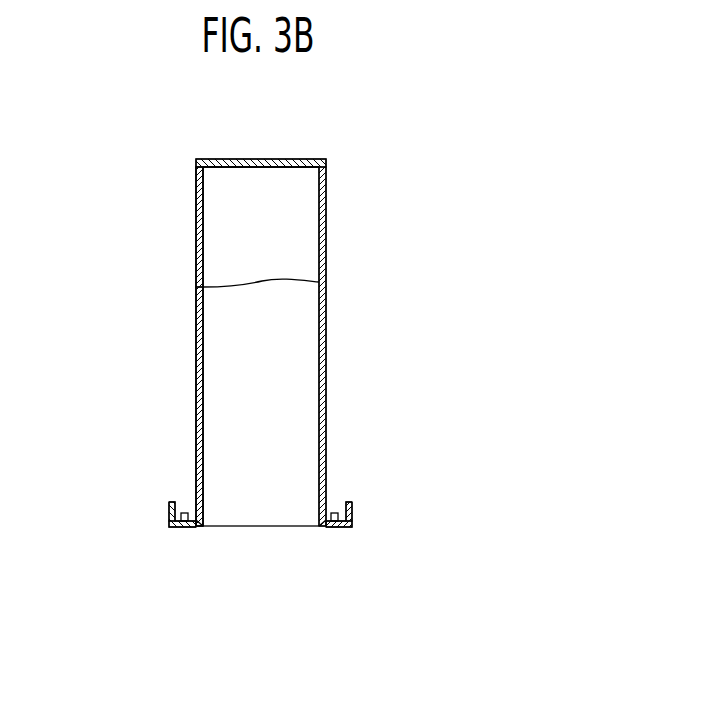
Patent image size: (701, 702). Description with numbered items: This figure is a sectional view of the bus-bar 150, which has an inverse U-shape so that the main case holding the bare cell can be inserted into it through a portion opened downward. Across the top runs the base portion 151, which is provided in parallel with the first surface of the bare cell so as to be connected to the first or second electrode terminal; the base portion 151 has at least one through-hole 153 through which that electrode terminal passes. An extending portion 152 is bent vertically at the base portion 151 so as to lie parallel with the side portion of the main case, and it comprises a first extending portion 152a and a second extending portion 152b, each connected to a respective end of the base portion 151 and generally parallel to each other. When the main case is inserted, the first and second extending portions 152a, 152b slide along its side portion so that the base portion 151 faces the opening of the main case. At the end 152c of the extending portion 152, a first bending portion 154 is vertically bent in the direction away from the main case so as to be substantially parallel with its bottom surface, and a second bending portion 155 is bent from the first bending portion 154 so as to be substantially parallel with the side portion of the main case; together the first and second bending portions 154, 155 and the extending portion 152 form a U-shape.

The bus-bar 150 is at (338, 146).
The base portion 151 is at (217, 159).
The through-hole 153 is at (261, 159).
The extending portion 152 is at (90, 240).
The first extending portion 152a is at (196, 255).
The second extending portion 152b is at (196, 287).
The end of the extending portion 152c is at (203, 527).
The first bending portion 154 is at (183, 528).
The second bending portion 155 is at (184, 503).